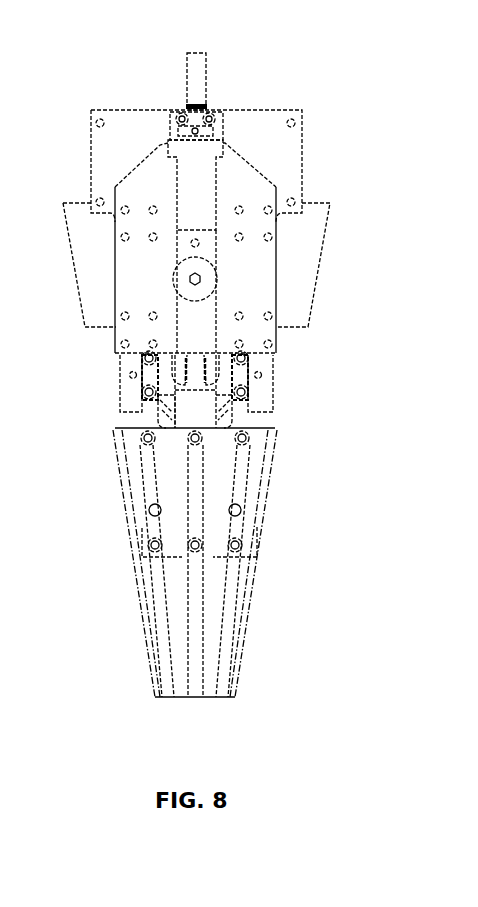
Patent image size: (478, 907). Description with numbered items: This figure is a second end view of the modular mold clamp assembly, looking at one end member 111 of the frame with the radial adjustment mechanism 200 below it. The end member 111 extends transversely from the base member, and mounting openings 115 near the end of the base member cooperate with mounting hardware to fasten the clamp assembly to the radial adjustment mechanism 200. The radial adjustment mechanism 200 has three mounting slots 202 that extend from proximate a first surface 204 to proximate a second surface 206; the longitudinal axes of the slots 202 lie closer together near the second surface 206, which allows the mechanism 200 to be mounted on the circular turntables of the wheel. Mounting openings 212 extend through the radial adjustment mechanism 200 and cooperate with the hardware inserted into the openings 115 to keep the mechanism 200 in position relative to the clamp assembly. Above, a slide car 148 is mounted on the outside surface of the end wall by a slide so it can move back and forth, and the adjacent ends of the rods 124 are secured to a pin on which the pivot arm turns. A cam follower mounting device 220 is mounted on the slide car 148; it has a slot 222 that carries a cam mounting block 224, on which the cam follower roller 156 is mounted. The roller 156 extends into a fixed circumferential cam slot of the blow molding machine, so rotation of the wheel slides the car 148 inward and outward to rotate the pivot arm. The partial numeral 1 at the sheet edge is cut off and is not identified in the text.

The cam follower mounting device 220 is at (242, 122).
The slot 222 is at (215, 173).
The cam mounting block 224 is at (190, 243).
The cam follower roller 156 is at (217, 277).
The slide car 148 is at (248, 328).
The end member 111 is at (272, 415).
The first surface 204 is at (116, 428).
The radial adjustment mechanism 200 is at (283, 621).
The mounting slots 202 is at (217, 678).
The mounting openings 212 is at (188, 549).
The mounting openings 115 is at (241, 514).
The second surface 206 is at (235, 697).
The rods 124 is at (8, 313).
The truncated numeral 1 is at (7, 373).